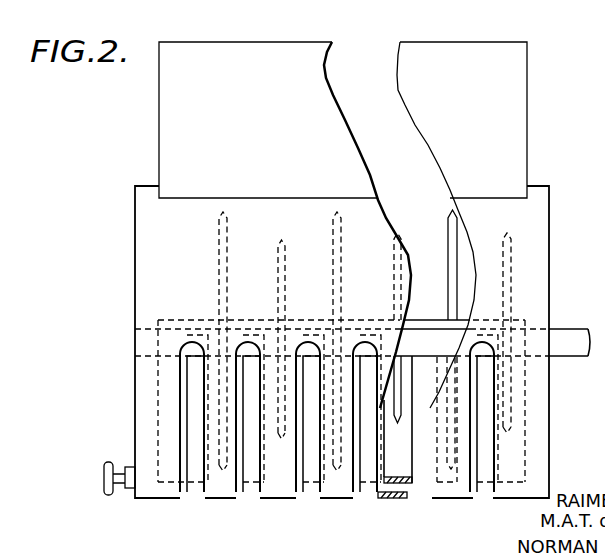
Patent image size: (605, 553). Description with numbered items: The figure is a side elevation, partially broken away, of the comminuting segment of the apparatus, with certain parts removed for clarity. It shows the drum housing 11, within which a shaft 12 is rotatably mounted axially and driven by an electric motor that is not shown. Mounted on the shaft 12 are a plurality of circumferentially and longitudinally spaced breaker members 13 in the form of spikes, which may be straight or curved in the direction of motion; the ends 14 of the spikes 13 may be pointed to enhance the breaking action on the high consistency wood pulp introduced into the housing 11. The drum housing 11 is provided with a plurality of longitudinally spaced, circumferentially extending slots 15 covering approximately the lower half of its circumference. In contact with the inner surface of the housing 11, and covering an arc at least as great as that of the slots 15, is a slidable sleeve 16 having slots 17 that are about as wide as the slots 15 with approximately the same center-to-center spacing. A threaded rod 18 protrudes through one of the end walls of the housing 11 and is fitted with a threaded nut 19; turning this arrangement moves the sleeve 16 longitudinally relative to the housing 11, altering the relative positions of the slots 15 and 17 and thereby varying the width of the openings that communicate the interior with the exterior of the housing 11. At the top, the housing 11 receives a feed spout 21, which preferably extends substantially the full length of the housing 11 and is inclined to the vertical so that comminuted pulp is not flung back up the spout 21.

The drum housing 11 is at (551, 214).
The shaft 12 is at (565, 352).
The breaker members 13 is at (219, 263).
The ends of the spikes 14 is at (333, 214).
The slots 15 is at (196, 498).
The slidable sleeve 16 is at (165, 364).
The slots 17 is at (196, 398).
The threaded rod 18 is at (120, 466).
The threaded nut 19 is at (136, 490).
The feed spout 21 is at (166, 115).